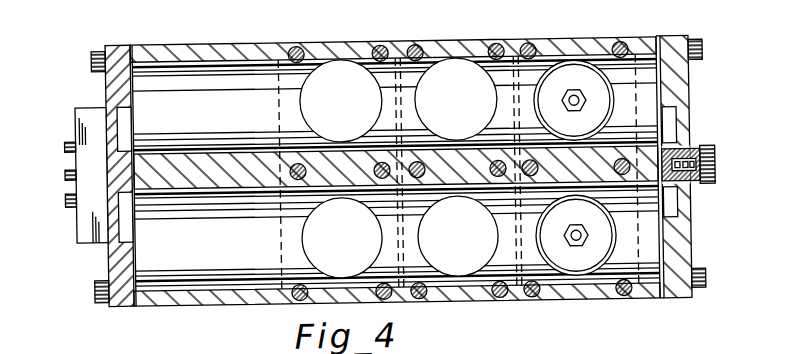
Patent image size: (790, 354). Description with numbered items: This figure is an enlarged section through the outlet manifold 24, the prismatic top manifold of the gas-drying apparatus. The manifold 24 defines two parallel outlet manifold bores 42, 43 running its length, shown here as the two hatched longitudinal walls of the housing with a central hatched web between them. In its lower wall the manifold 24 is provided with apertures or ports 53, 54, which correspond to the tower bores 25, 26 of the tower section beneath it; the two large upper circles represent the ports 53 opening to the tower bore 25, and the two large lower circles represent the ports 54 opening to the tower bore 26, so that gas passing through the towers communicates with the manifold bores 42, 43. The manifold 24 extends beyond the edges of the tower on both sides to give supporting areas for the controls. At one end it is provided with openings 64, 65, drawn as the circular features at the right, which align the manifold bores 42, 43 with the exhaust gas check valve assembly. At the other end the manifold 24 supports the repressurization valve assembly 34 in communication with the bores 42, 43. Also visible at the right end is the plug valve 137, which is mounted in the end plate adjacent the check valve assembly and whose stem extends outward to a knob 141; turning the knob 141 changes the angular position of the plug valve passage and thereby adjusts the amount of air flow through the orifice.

The outlet manifold 24 is at (520, 42).
The tower bore 25 is at (330, 77).
The tower bore 26 is at (313, 258).
The repressurization valve assembly 34 is at (88, 134).
The outlet manifold bore 42 is at (212, 56).
The outlet manifold bore 43 is at (206, 285).
The port 53 is at (359, 64).
The port 54 is at (302, 223).
The opening 64 is at (586, 62).
The opening 65 is at (600, 268).
The plug valve 137 is at (680, 147).
The knob 141 is at (708, 188).